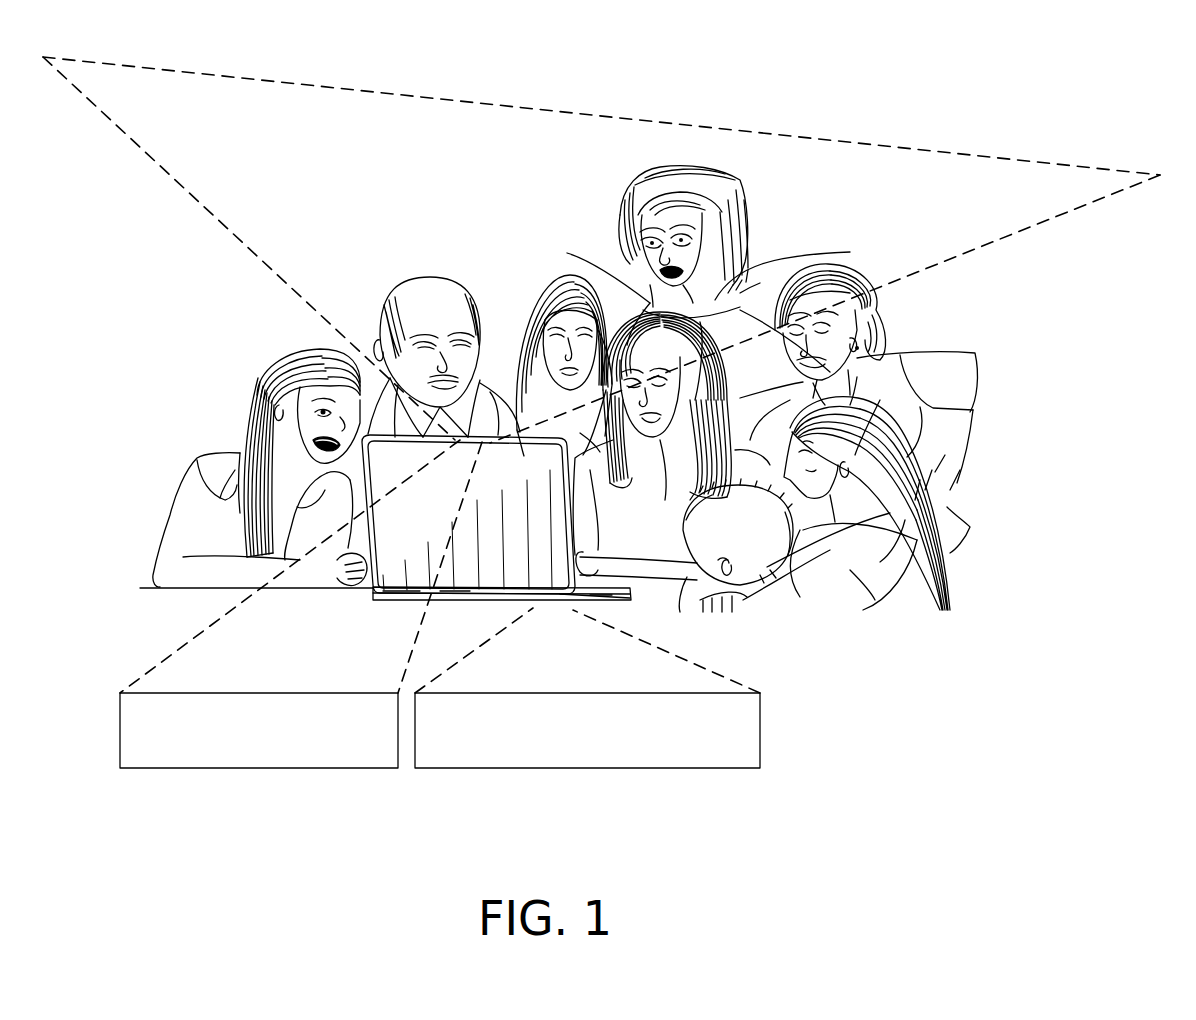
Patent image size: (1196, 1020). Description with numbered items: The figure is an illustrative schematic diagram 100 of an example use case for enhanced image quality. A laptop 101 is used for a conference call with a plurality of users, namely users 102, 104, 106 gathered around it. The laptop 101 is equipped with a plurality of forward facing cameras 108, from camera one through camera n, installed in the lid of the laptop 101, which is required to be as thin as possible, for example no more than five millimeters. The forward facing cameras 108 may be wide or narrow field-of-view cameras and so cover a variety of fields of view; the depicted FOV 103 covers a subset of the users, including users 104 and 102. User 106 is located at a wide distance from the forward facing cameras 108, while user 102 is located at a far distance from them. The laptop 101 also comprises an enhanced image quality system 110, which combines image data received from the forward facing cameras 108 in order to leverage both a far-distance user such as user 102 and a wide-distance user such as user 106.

The schematic diagram 100 is at (1065, 44).
The laptop 101 is at (392, 598).
The user 102 is at (632, 180).
The FOV 103 is at (337, 88).
The user 104 is at (585, 268).
The user 106 is at (847, 263).
The forward facing cameras 108 is at (305, 693).
The enhanced image quality system 110 is at (585, 693).